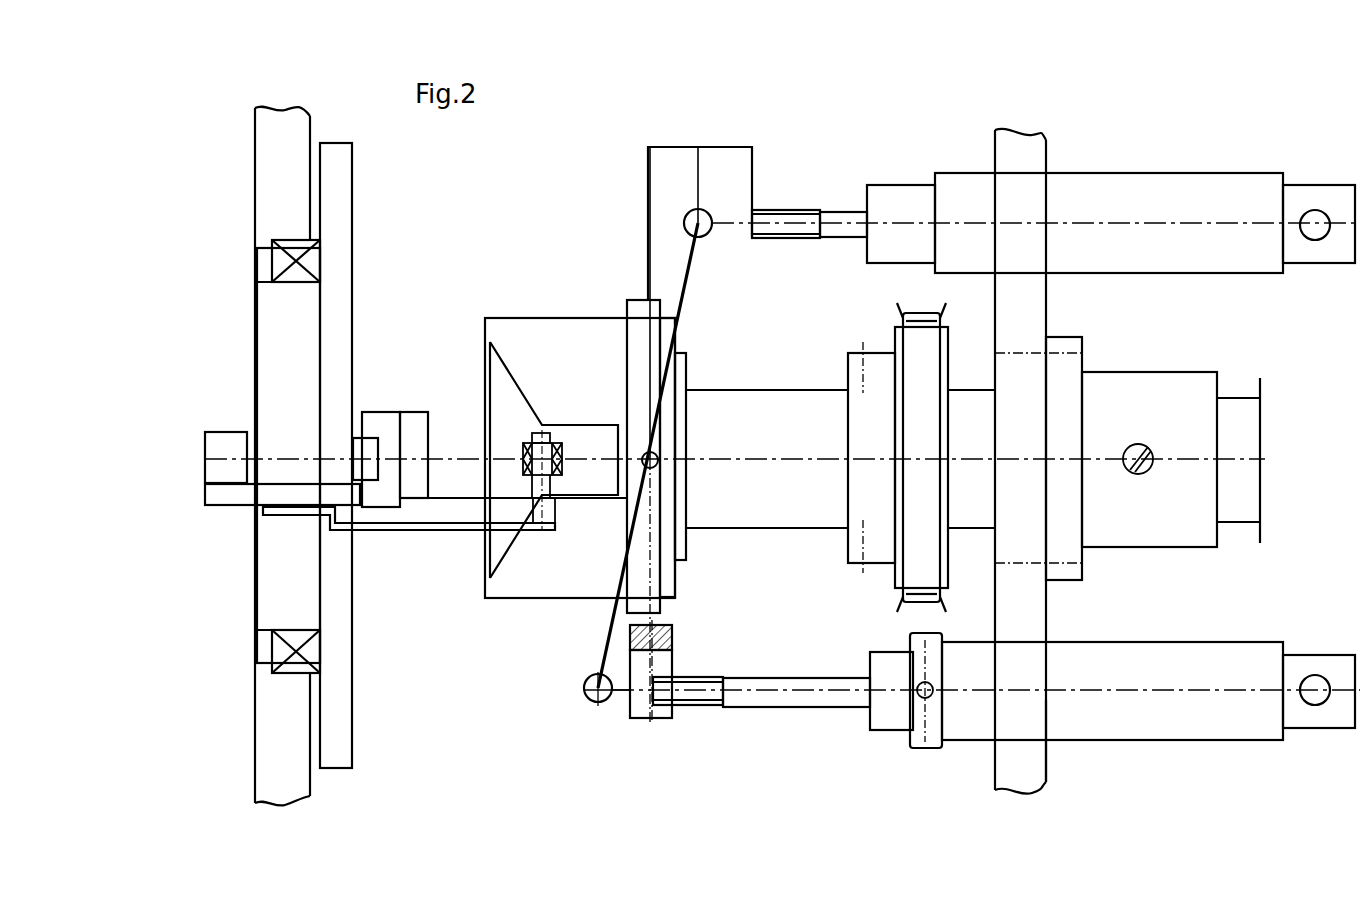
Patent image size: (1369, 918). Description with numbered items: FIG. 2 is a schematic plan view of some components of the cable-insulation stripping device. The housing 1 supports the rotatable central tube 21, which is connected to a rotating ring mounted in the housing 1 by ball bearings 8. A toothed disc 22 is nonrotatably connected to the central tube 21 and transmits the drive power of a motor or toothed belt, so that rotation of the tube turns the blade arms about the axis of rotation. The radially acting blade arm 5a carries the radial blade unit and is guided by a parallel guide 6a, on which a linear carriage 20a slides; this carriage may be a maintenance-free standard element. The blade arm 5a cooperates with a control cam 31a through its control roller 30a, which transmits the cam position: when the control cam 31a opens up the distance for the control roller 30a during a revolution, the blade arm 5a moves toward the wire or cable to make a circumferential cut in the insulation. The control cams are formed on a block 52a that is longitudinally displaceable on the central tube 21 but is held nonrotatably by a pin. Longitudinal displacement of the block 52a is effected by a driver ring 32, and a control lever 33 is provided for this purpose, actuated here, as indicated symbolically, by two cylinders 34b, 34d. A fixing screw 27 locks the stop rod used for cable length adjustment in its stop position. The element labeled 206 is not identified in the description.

The housing 1 is at (267, 122).
The block 52a is at (595, 332).
The ball bearing 8 is at (272, 248).
The control cam 31a is at (512, 400).
The linear carriage 20a is at (375, 422).
The parallel guide 6a is at (362, 440).
The blade arm 5a is at (237, 498).
The control roller 30a is at (523, 463).
The driver ring 32 is at (623, 495).
The control lever 33 is at (603, 642).
The central tube 21 is at (772, 438).
The toothed disc 22 is at (925, 338).
The cylinder 34b is at (1195, 258).
The lower actuating cylinder 34d is at (1090, 676).
The fixing screw 27 is at (1138, 477).
The support 206 is at (1013, 756).